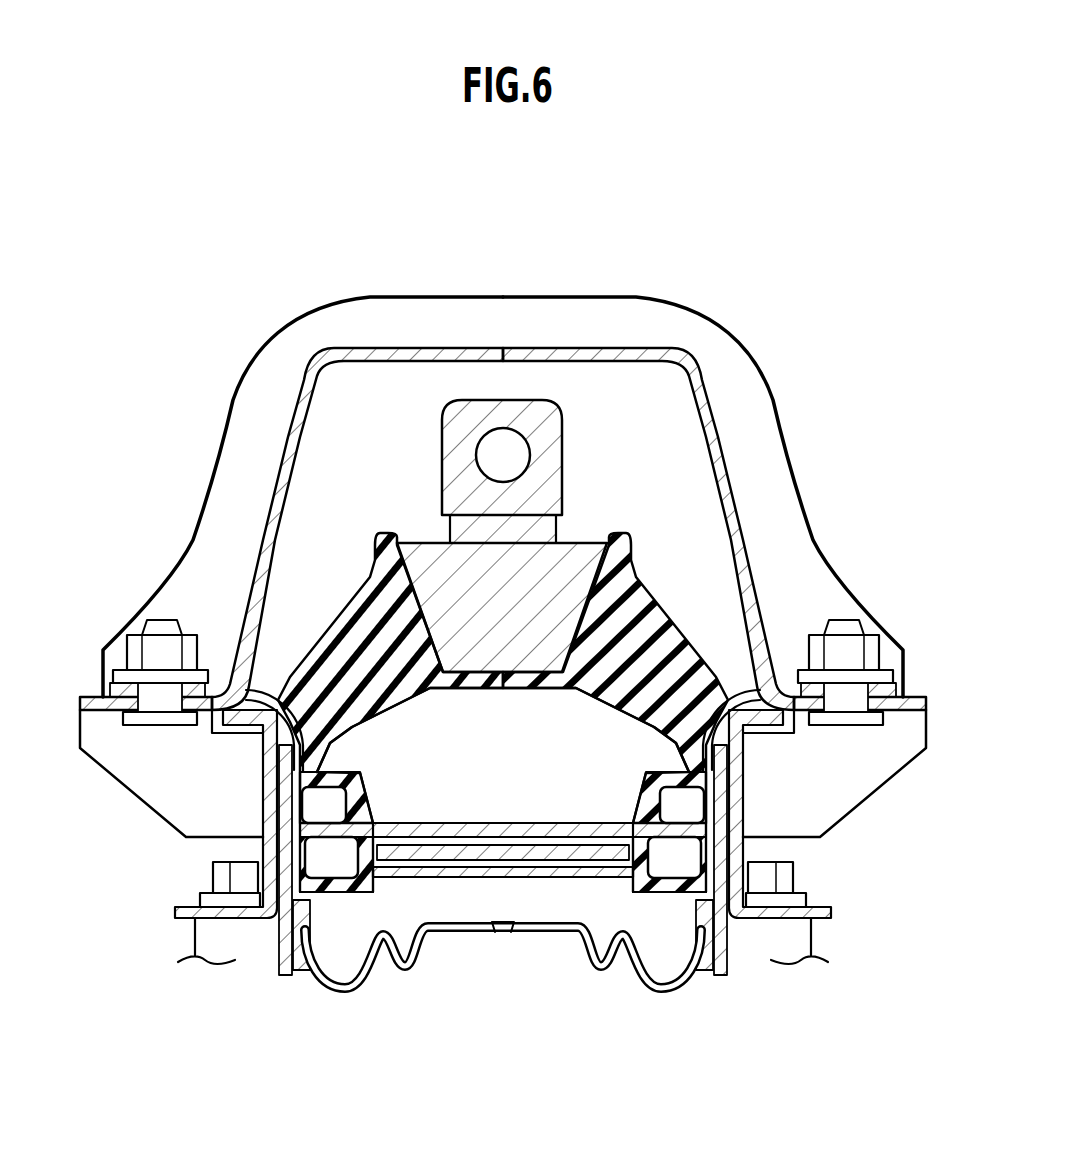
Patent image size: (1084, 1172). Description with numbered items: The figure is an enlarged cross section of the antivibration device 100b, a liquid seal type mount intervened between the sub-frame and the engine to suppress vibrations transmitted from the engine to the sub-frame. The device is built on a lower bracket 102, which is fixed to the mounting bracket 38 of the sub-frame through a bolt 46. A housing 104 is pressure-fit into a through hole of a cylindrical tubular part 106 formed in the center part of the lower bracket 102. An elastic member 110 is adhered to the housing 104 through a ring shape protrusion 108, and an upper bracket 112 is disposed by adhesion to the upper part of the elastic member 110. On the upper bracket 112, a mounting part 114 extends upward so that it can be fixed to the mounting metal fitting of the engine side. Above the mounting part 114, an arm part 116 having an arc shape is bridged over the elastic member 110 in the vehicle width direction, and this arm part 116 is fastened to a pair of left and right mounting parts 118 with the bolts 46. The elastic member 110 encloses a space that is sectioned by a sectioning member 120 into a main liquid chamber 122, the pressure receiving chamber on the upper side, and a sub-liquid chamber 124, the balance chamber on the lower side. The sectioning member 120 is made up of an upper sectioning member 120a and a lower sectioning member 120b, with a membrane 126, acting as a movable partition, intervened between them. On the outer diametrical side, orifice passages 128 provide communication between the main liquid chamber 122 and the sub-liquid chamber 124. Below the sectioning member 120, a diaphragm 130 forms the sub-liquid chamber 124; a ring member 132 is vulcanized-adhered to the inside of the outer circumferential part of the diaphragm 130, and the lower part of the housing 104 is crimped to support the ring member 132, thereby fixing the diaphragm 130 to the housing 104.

The antivibration device 100b is at (697, 285).
The arm part 116 is at (505, 297).
The mounting parts 118 is at (85, 697).
The mounting part 114 is at (555, 447).
The upper bracket 112 is at (445, 540).
The elastic member 110 is at (642, 597).
The ring shape protrusion 108 is at (690, 740).
The main liquid chamber 122 is at (527, 762).
The membrane 126 is at (440, 850).
The upper sectioning member 120a is at (550, 830).
The lower sectioning member 120b is at (558, 878).
The sectioning member 120 is at (503, 907).
The sub-liquid chamber 124 is at (527, 911).
The orifice passages 128 is at (322, 800).
The bolt 46 is at (135, 650).
The housing 104 is at (265, 860).
The lower bracket 102 is at (748, 852).
The cylindrical tubular part 106 is at (740, 806).
The diaphragm 130 is at (505, 935).
The ring member 132 is at (300, 972).
The mounting bracket 38 is at (826, 948).